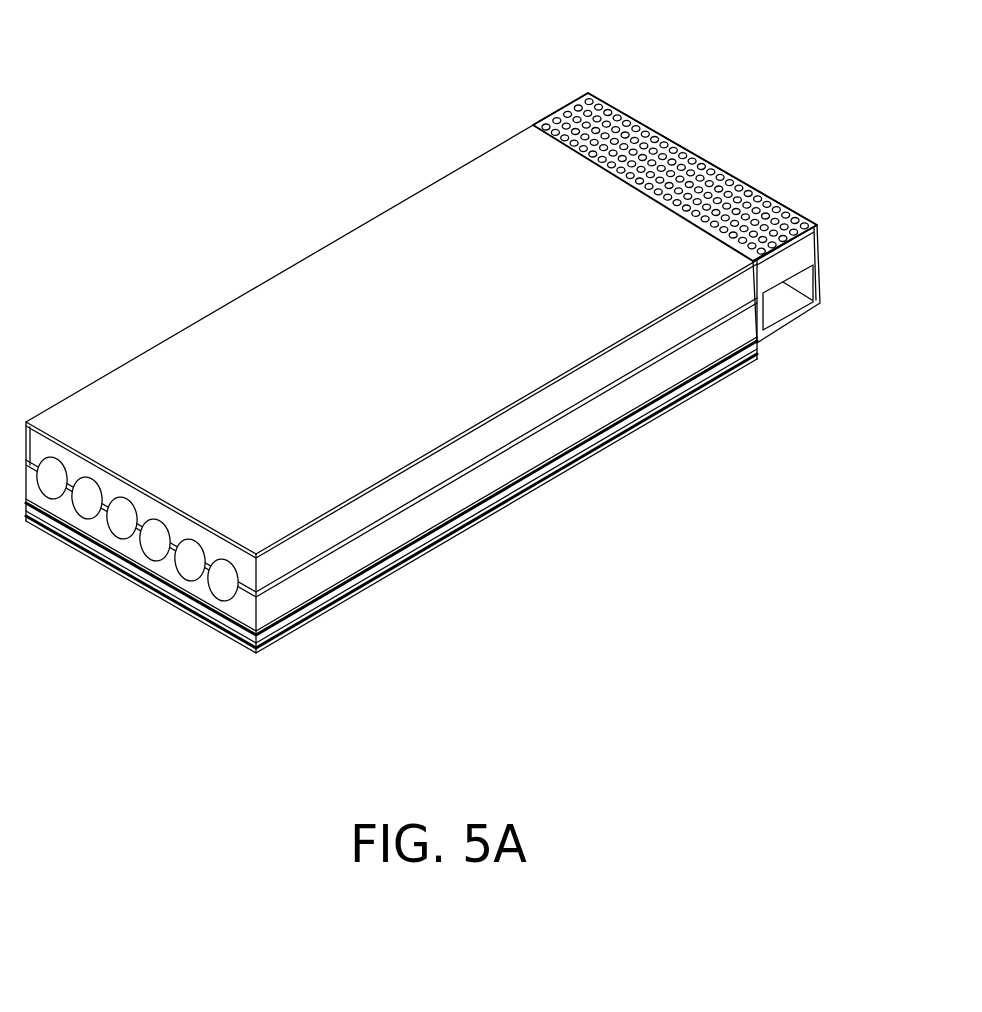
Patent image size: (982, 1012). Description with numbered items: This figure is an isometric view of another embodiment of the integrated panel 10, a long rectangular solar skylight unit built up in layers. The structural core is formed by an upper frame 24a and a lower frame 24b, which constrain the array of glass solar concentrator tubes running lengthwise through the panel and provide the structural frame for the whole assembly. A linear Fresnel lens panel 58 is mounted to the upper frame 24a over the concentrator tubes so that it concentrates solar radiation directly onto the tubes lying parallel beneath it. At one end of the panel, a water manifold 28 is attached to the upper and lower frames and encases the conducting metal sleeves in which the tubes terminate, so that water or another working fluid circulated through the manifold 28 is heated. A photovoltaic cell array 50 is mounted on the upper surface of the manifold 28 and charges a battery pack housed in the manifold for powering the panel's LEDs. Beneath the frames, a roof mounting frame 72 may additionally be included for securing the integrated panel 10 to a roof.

The integrated panel 10 is at (174, 256).
The upper frame 24a is at (543, 412).
The lower frame 24b is at (503, 477).
The water manifold 28 is at (803, 255).
The photovoltaic cell array 50 is at (582, 100).
The linear Fresnel lens panel 58 is at (307, 347).
The roof mounting frame 72 is at (318, 628).